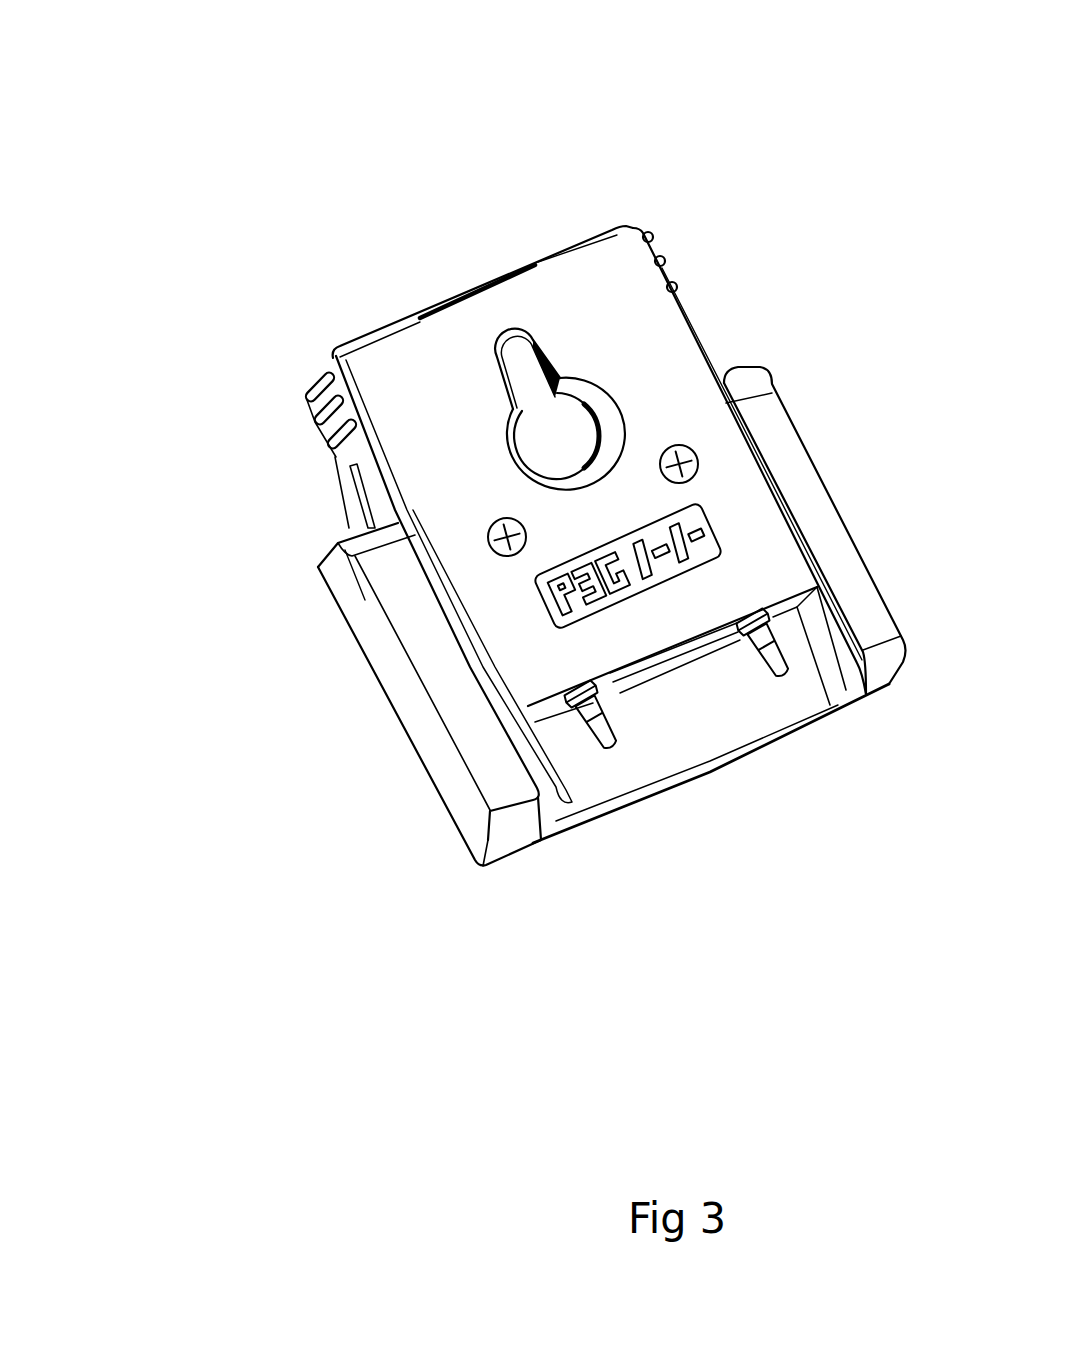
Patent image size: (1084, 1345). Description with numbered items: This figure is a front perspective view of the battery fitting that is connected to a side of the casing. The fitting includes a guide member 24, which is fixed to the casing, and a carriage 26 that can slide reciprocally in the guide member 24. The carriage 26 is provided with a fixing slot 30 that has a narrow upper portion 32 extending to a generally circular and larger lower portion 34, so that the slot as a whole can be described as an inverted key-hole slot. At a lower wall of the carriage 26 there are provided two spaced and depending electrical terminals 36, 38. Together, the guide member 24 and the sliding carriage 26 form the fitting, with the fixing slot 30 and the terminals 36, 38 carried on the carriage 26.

The guide member 24 is at (398, 682).
The carriage 26 is at (303, 388).
The fixing slot 30 is at (613, 405).
The narrow upper portion 32 is at (510, 373).
The lower portion 34 is at (561, 415).
The electrical terminal 36 is at (614, 762).
The electrical terminal 38 is at (798, 697).